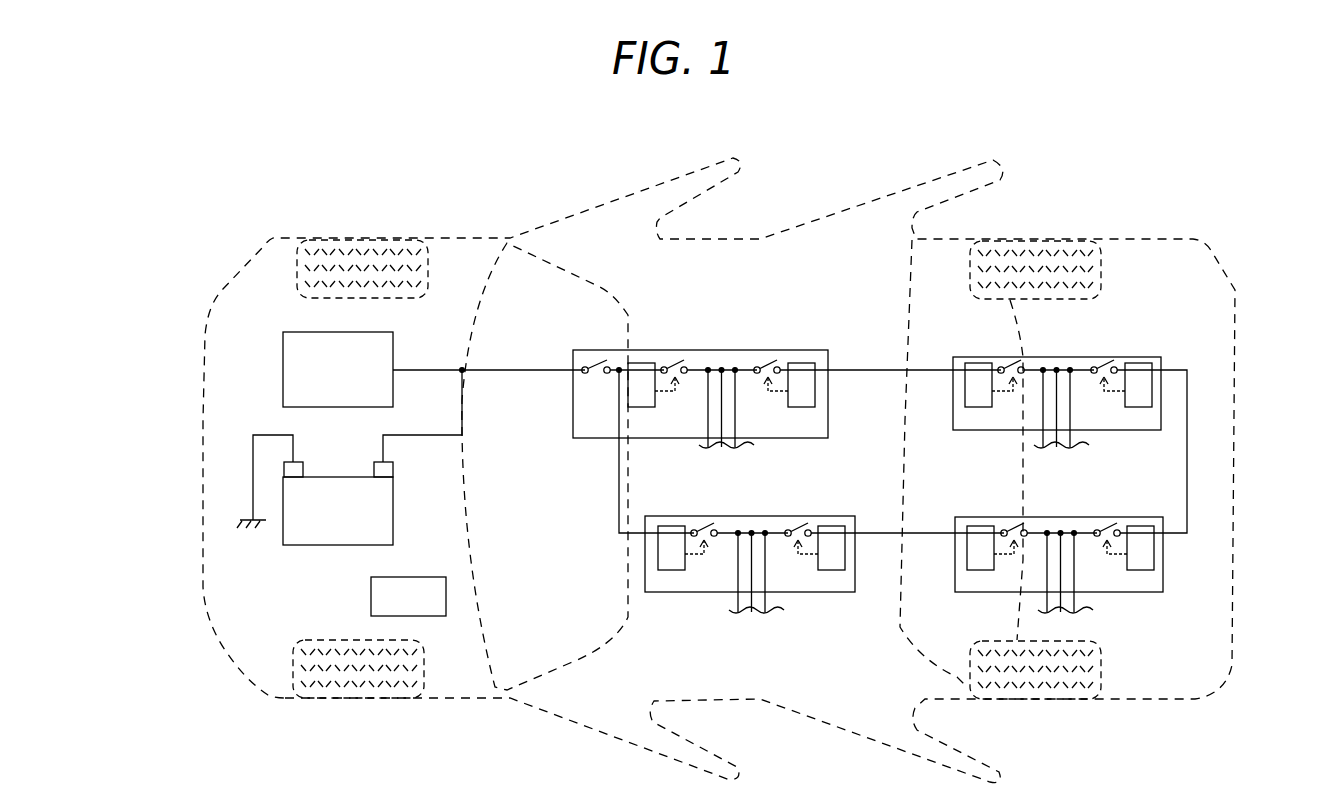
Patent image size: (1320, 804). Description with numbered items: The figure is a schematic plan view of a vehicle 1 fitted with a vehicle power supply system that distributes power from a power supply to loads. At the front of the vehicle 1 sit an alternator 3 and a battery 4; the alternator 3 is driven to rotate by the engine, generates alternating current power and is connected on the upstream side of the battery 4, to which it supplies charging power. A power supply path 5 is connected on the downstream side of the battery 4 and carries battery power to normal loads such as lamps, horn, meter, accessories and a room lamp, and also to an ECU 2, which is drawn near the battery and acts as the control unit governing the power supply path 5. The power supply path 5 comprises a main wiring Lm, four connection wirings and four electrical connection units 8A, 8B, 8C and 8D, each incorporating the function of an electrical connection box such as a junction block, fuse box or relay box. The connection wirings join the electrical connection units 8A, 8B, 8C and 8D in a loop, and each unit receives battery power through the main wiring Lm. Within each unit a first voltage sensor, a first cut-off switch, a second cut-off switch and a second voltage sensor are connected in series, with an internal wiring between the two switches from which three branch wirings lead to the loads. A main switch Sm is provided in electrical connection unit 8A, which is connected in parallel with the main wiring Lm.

The vehicle 1 is at (1063, 196).
The ECU 2 is at (407, 577).
The alternator 3 is at (283, 357).
The battery 4 is at (337, 545).
The power supply path 5 is at (484, 315).
The electrical connection unit 8A is at (573, 398).
The electrical connection unit 8B is at (1163, 366).
The electrical connection unit 8C is at (1167, 592).
The electrical connection unit 8D is at (643, 547).
The main wiring Lm is at (510, 352).
The main switch Sm is at (590, 362).